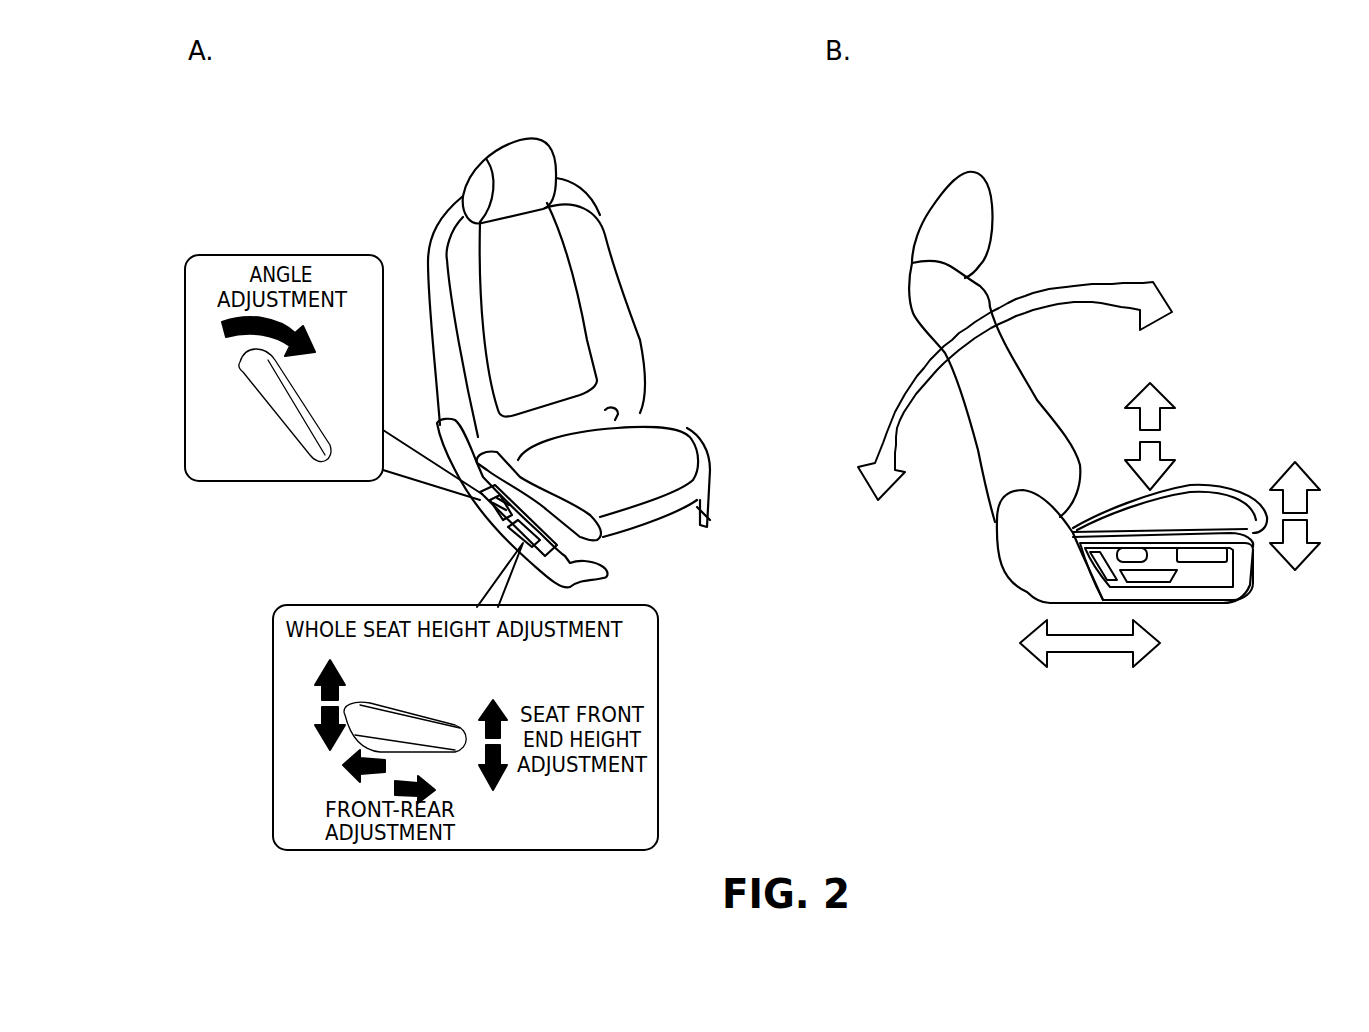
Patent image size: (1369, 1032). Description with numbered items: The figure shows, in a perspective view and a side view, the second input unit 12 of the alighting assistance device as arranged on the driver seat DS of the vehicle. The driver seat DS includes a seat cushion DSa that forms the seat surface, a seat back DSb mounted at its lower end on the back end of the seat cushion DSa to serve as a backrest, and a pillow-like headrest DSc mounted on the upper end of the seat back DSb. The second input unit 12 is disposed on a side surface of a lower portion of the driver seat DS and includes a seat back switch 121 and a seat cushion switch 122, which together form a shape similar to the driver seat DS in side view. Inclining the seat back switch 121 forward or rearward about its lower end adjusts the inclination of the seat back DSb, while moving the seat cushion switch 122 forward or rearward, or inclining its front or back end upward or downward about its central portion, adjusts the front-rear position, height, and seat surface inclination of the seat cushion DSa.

The driver seat DS is at (583, 108).
The seat cushion DSa is at (637, 460).
The seat back DSb is at (572, 186).
The headrest DSc is at (518, 150).
The second input unit 12 is at (177, 552).
The seat back switch 121 is at (280, 428).
The seat cushion switch 122 is at (367, 735).